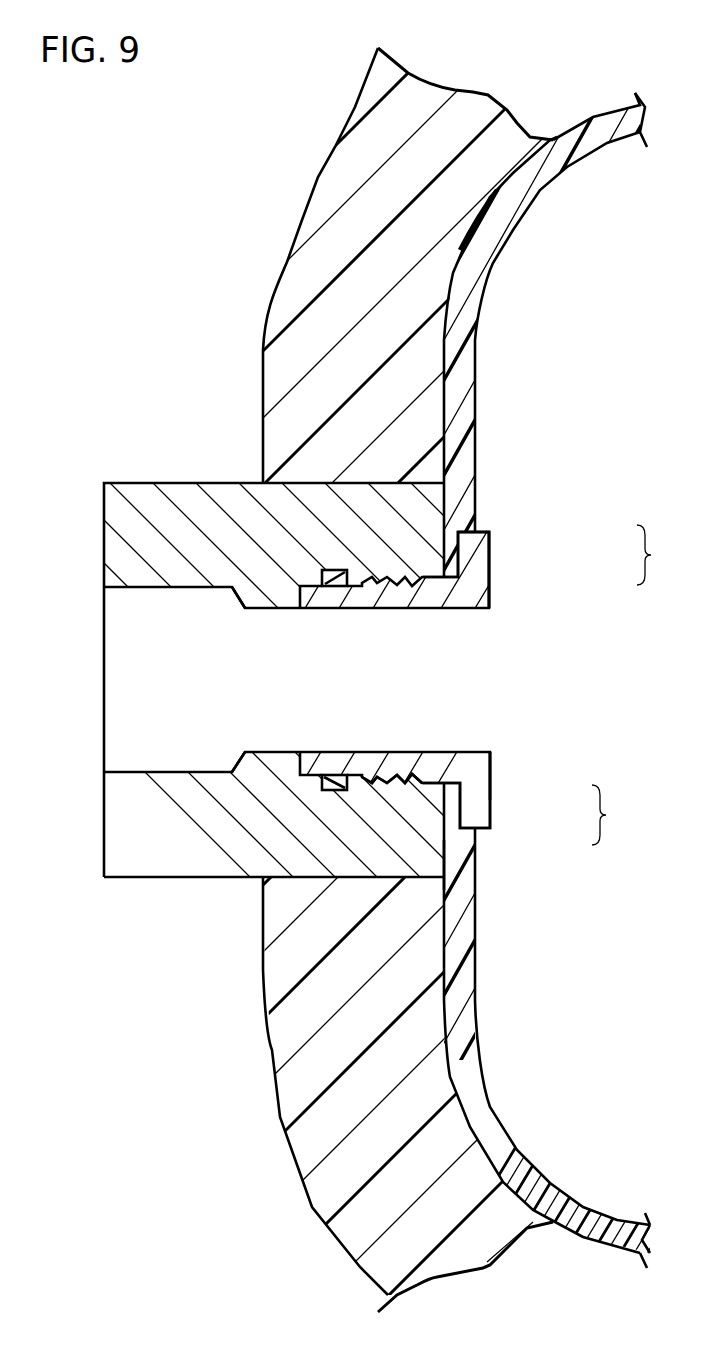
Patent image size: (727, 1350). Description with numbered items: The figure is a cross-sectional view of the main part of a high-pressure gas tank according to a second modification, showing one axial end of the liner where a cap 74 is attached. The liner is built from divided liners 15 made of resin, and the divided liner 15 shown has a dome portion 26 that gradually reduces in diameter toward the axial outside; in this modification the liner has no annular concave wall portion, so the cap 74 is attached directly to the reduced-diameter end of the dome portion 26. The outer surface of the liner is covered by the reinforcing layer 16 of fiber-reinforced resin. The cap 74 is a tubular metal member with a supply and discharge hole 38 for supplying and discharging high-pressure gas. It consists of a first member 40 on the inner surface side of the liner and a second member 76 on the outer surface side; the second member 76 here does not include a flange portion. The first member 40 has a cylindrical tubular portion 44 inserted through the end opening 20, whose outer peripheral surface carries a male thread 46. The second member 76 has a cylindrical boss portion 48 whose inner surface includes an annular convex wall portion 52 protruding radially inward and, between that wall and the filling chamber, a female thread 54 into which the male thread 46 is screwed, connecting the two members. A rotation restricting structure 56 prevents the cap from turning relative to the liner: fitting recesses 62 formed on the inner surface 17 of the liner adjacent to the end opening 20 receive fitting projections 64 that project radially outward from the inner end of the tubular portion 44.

The divided liner 15 is at (603, 108).
The reinforcing layer 16 is at (350, 188).
The inner surface 17 is at (476, 464).
The dome portion 26 is at (490, 230).
The boss portion 48 is at (148, 497).
The tubular portion 44 is at (440, 762).
The end opening 20 is at (452, 565).
The male thread 46 is at (396, 583).
The annular convex wall portion 52 is at (263, 605).
The female thread 54 is at (400, 748).
The supply and discharge hole 38 is at (135, 682).
The fitting recess 62 is at (470, 536).
The fitting projection 64 is at (480, 566).
The rotation restricting structure 56 is at (657, 555).
The first member 40 is at (494, 778).
The second member 76 is at (446, 865).
The cap 74 is at (612, 815).